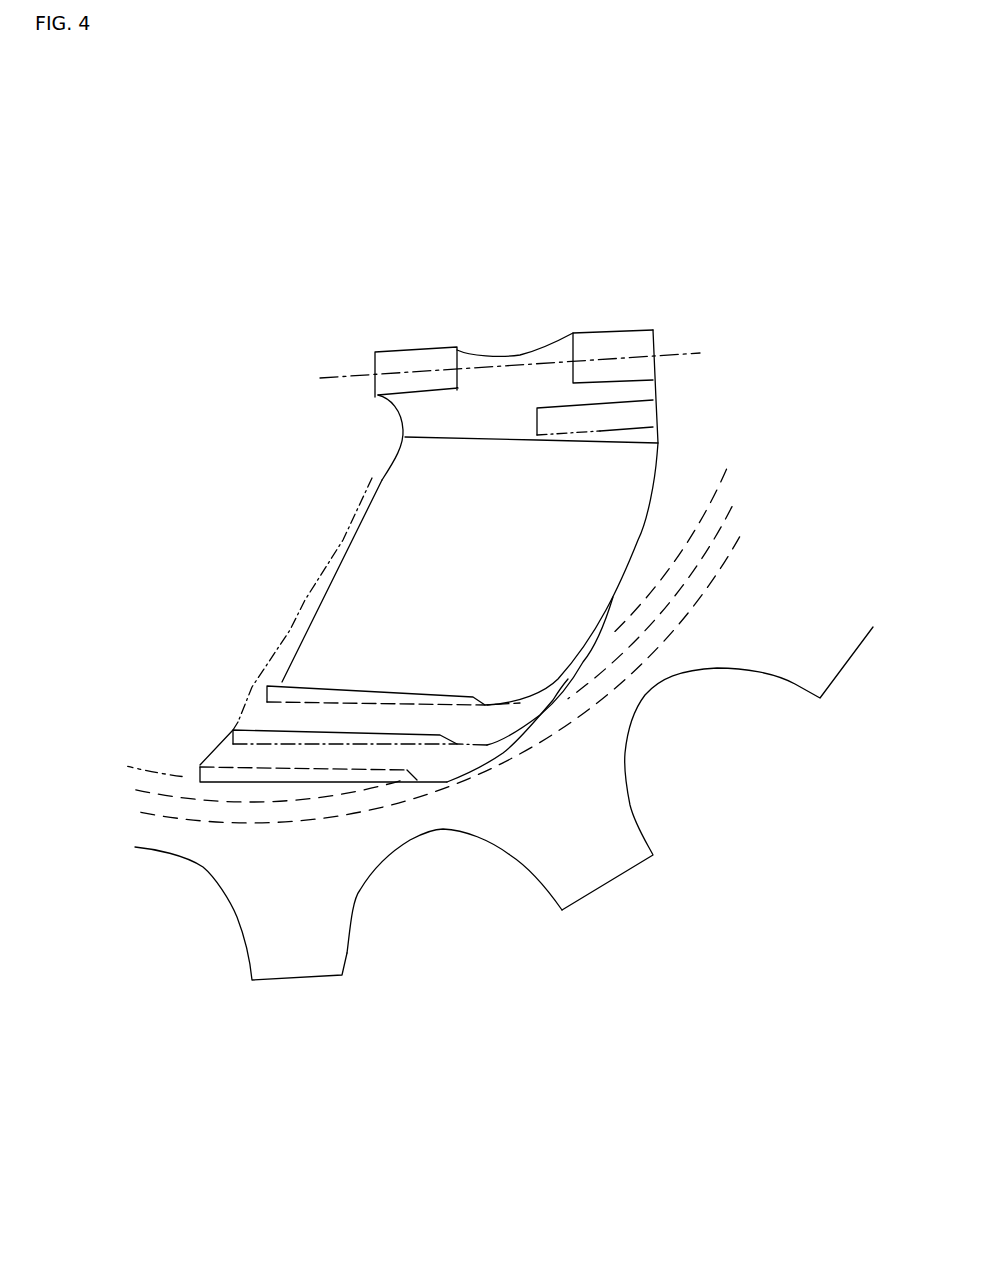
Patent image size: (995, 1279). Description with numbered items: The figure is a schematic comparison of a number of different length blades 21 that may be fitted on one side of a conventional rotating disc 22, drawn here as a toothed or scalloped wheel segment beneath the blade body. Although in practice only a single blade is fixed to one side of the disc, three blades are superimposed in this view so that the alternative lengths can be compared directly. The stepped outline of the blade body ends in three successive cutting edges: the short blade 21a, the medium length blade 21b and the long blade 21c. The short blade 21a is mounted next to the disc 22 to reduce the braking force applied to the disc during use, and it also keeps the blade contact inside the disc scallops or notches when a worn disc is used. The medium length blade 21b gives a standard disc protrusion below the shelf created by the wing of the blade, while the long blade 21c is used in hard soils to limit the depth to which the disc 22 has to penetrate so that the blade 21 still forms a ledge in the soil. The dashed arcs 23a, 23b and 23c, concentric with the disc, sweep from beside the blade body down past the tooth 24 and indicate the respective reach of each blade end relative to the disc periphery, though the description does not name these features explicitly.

The blade 21 is at (273, 638).
The short blade 21a is at (393, 691).
The medium length blade 21b is at (423, 671).
The long blade 21c is at (384, 730).
The disc 22 is at (250, 990).
The first machining circle 23a is at (458, 606).
The second machining circle 23b is at (469, 641).
The third machining circle 23c is at (482, 672).
The gear tooth 24 is at (435, 842).